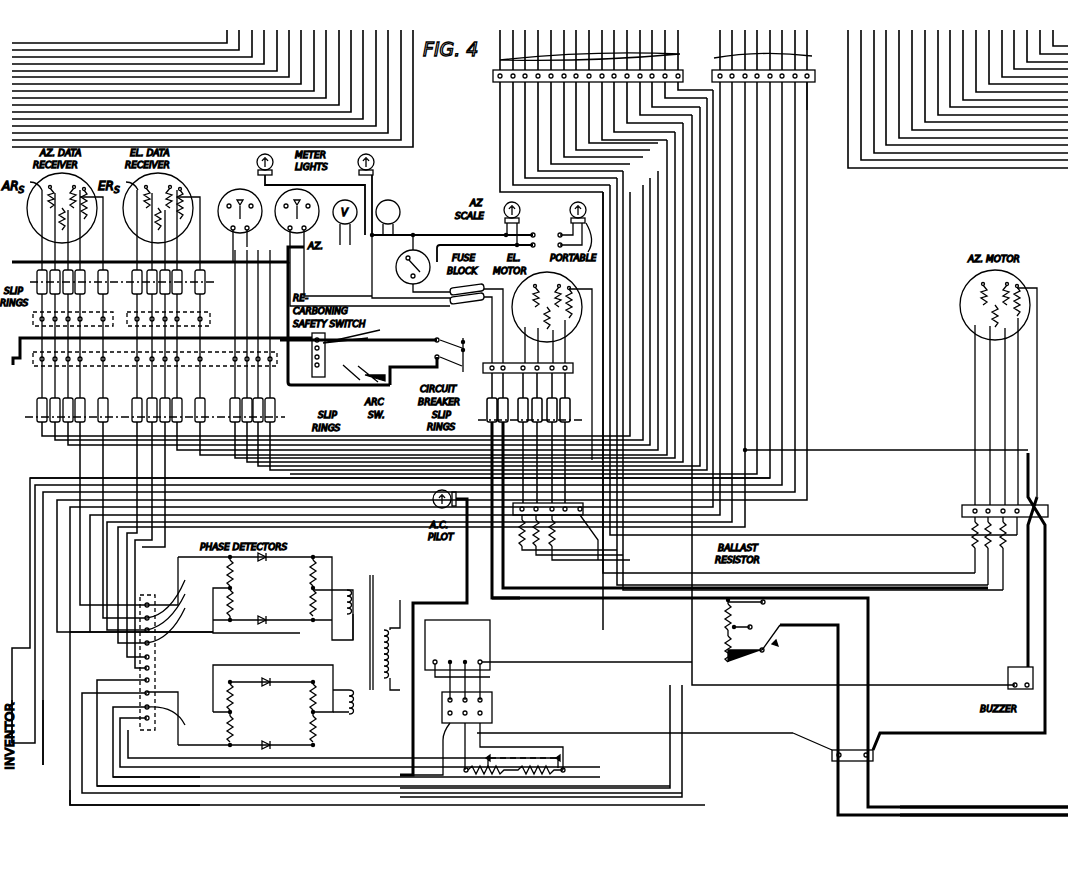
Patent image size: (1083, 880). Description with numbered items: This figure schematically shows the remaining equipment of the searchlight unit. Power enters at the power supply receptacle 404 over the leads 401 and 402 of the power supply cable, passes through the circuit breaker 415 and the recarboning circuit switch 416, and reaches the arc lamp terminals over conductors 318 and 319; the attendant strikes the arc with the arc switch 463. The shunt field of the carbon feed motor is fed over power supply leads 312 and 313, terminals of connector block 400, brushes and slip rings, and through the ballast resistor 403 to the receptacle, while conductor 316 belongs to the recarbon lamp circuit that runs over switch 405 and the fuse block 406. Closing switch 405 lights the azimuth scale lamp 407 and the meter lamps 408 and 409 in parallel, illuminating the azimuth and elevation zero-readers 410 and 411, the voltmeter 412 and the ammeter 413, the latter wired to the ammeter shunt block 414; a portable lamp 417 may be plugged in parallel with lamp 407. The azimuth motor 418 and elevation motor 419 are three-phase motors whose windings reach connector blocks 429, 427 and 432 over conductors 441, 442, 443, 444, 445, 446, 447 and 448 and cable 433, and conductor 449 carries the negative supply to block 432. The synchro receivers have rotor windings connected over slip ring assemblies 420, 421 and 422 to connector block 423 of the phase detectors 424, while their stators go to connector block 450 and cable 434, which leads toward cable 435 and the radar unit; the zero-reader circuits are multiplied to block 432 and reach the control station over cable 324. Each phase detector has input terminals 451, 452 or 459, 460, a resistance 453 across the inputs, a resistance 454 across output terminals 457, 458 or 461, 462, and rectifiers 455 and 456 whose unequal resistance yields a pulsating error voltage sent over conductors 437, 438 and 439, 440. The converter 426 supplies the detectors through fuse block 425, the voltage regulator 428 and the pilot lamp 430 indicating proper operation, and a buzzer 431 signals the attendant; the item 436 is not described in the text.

The power supply lead 312 is at (58, 468).
The power supply lead 313 is at (35, 762).
The conductor 316 is at (43, 775).
The conductor 318 is at (30, 262).
The conductor 319 is at (14, 366).
The cable 324 is at (110, 42).
The connector block 400 is at (567, 374).
The power supply cable lead 401 is at (520, 600).
The positive power lead 402 is at (556, 598).
The ballast resistor 403 is at (758, 618).
The power supply receptacle 404 is at (835, 762).
The switch 405 is at (414, 248).
The fuse block 406 is at (462, 300).
The azimuth scale lamp 407 is at (503, 220).
The meter lamp 408 is at (376, 160).
The meter lamp 409 is at (256, 161).
The azimuth zero-reader 410 is at (312, 200).
The elevation zero-reader 411 is at (222, 200).
The voltmeter 412 is at (341, 268).
The ammeter 413 is at (404, 190).
The ammeter shunt block 414 is at (310, 380).
The circuit breaker 415 is at (460, 368).
The recarboning circuit switch 416 is at (340, 334).
The portable lamp 417 is at (568, 214).
The azimuth motor 418 is at (972, 282).
The elevation motor 419 is at (582, 276).
The slip ring assembly 420 is at (37, 282).
The slip ring assembly 421 is at (210, 290).
The slip ring assembly 422 is at (32, 425).
The connector block 423 is at (148, 600).
The phase detectors 424 is at (271, 640).
The fuse block 425 is at (492, 710).
The converter 426 is at (490, 648).
The connector block 427 is at (582, 503).
The voltage regulator 428 is at (566, 760).
The connector block 429 is at (967, 505).
The pilot lamp 430 is at (433, 503).
The buzzer 431 is at (1008, 676).
The connector block 432 is at (493, 76).
The cable 433 is at (602, 49).
The cable 434 is at (806, 56).
The cable 435 is at (1052, 172).
The power cable 436 is at (965, 782).
The conductor 437 is at (80, 620).
The conductor 438 is at (72, 806).
The conductor 439 is at (130, 795).
The conductor 440 is at (190, 795).
The conductor 441 is at (578, 88).
The conductor 442 is at (566, 100).
The conductor 443 is at (553, 115).
The conductor 444 is at (540, 133).
The conductor 445 is at (527, 148).
The conductor 446 is at (515, 168).
The conductor 447 is at (503, 188).
The conductor 448 is at (613, 140).
The conductor 449 is at (660, 618).
The connector block 450 is at (807, 84).
The input terminal 451 is at (170, 585).
The input terminal 452 is at (178, 593).
The resistance 453 is at (236, 588).
The resistance 454 is at (296, 588).
The rectifier 455 is at (268, 560).
The rectifier 456 is at (266, 616).
The output terminal 457 is at (177, 620).
The output terminal 458 is at (177, 606).
The input terminal 459 is at (140, 720).
The input terminal 460 is at (213, 712).
The output terminal 461 is at (130, 705).
The output terminal 462 is at (215, 690).
The arc switch 463 is at (348, 378).